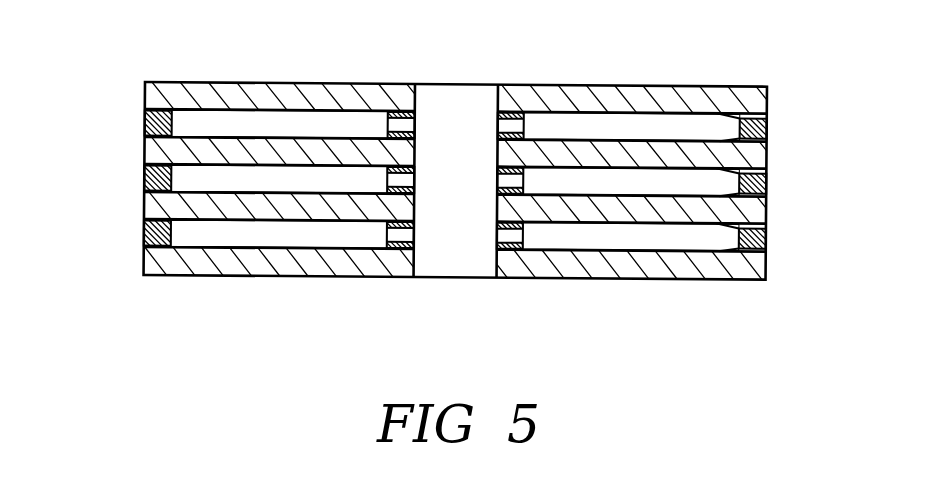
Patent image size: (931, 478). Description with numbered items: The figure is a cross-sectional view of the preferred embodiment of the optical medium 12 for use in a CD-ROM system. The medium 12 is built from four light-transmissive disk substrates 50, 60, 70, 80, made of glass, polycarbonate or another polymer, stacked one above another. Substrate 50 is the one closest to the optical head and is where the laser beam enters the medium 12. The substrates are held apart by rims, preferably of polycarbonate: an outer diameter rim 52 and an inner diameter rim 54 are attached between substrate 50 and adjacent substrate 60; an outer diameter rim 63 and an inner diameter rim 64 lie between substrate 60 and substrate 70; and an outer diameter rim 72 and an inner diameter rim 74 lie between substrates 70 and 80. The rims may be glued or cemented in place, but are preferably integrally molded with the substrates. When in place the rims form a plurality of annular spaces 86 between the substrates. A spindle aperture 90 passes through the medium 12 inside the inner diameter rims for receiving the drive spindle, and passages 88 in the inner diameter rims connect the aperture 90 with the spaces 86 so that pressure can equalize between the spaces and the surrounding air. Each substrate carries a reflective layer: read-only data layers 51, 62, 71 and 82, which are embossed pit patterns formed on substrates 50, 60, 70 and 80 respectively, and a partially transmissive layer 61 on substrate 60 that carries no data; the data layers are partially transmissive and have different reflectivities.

The optical medium 12 is at (236, 312).
The disk substrate 50 is at (145, 265).
The data layer 51 is at (767, 248).
The outer diameter rim 52 is at (145, 238).
The inner diameter rim 54 is at (415, 226).
The disk substrate 60 is at (145, 210).
The partially transmissive layer 61 is at (767, 188).
The data layer 62 is at (767, 233).
The outer diameter rim 63 is at (145, 181).
The inner diameter rim 64 is at (415, 171).
The disk substrate 70 is at (145, 153).
The data layer 71 is at (767, 142).
The outer diameter rim 72 is at (145, 122).
The inner diameter rim 74 is at (415, 116).
The disk substrate 80 is at (145, 98).
The data layer 82 is at (767, 123).
The annular spaces 86 is at (282, 128).
The passages 88 is at (498, 124).
The spindle aperture 90 is at (486, 86).